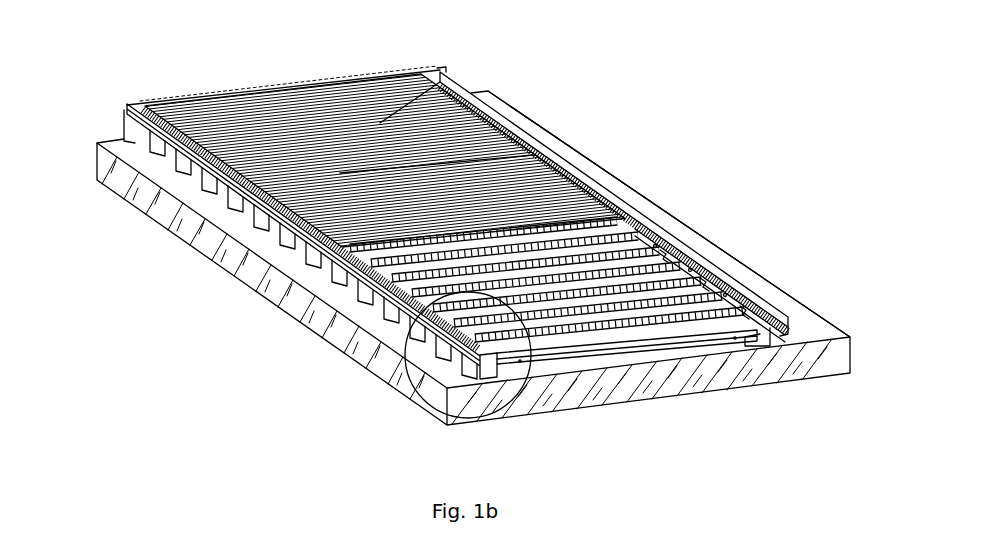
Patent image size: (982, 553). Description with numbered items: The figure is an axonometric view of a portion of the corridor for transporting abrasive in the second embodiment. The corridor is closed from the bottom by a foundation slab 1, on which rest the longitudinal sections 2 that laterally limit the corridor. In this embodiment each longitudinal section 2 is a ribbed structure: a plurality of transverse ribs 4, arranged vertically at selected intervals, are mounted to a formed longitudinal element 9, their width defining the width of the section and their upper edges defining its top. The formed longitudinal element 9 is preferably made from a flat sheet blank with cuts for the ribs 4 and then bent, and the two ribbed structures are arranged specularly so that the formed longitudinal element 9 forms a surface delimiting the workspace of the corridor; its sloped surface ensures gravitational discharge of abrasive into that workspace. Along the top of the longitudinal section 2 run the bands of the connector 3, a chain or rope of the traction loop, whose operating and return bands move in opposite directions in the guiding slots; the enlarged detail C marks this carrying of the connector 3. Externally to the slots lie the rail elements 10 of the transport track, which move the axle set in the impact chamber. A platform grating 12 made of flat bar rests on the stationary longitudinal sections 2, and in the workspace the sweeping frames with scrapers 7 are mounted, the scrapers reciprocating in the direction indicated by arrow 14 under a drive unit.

The foundation slab 1 is at (733, 365).
The longitudinal section 2 is at (343, 307).
The connector 3 is at (293, 242).
The transverse ribs 4 is at (267, 228).
The sweeping frames with scrapers 7 is at (607, 325).
The formed longitudinal element 9 is at (778, 338).
The rail elements 10 is at (438, 69).
The platform grating 12 is at (453, 75).
The arrow 14 is at (580, 317).
The detail C is at (445, 378).